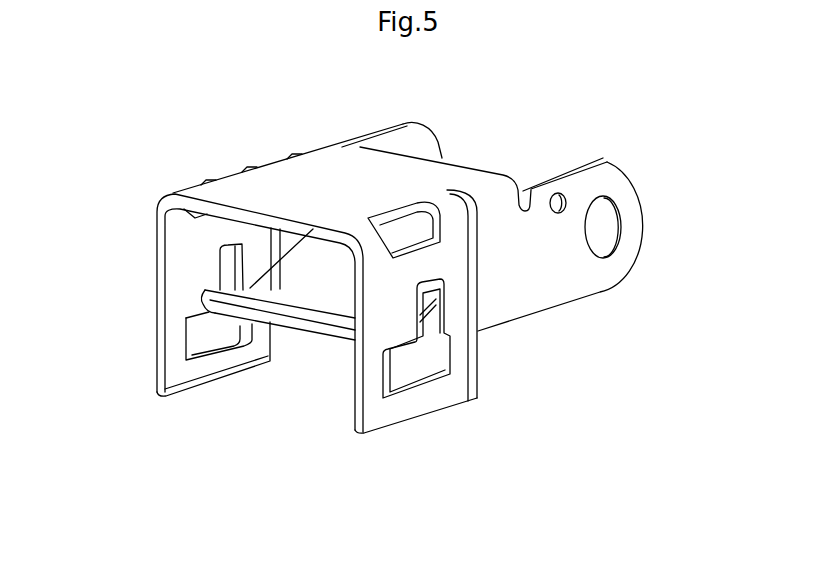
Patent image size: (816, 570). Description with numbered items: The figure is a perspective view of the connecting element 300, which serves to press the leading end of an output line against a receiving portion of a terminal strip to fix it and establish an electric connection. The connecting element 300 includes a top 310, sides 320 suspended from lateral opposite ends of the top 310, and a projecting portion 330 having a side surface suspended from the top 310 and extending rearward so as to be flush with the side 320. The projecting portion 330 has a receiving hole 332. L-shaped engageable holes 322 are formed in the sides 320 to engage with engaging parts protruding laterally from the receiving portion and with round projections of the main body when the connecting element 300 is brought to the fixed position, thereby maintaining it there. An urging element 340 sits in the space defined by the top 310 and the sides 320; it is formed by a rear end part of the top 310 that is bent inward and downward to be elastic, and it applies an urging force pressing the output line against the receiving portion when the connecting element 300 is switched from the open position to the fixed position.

The connecting element 300 is at (223, 154).
The top 310 is at (317, 186).
The sides 320 is at (352, 382).
The L-shaped engageable holes 322 is at (212, 331).
The projecting portion 330 is at (546, 283).
The receiving hole 332 is at (592, 220).
The urging element 340 is at (278, 283).